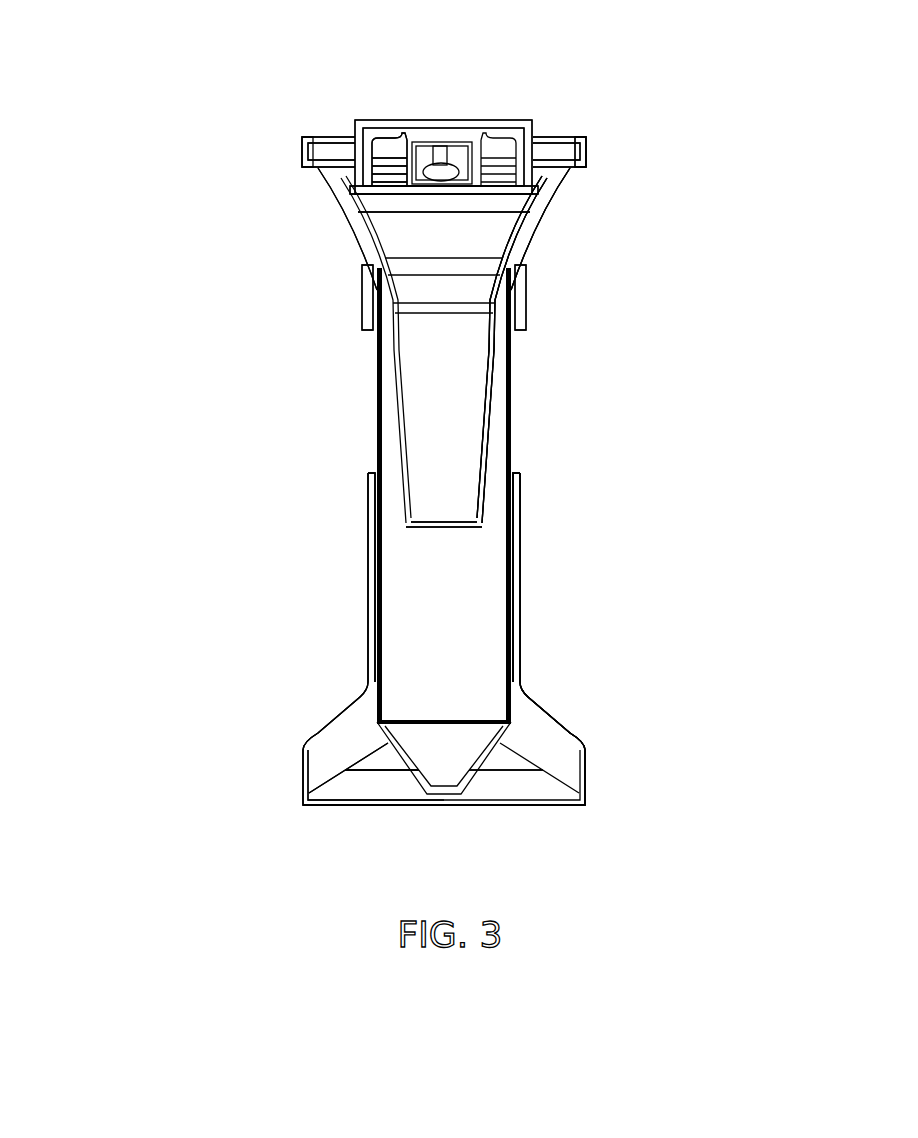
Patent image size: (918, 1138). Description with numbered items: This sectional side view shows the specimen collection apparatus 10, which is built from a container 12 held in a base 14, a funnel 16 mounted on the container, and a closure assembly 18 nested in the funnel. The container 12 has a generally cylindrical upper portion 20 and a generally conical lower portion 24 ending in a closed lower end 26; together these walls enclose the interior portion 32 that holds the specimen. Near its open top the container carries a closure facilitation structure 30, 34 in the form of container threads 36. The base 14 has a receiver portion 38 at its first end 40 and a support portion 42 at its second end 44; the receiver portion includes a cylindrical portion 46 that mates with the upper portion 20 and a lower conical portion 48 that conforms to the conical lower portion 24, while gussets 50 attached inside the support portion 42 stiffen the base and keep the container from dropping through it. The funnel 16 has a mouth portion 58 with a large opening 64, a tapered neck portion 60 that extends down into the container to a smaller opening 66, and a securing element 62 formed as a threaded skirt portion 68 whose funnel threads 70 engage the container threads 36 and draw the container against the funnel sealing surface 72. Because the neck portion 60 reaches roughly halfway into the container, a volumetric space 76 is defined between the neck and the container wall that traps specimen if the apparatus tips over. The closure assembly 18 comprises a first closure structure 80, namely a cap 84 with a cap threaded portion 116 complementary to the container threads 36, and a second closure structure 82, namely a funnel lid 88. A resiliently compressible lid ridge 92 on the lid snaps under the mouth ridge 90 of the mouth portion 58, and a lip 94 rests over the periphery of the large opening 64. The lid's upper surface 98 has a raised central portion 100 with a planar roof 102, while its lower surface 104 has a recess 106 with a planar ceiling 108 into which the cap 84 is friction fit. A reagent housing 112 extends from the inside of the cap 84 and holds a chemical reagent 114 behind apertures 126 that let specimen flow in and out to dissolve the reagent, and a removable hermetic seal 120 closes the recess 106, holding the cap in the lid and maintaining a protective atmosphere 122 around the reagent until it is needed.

The specimen collection apparatus 10 is at (128, 248).
The container 12 is at (512, 373).
The base 14 is at (592, 672).
The funnel 16 is at (664, 237).
The closure assembly 18 is at (635, 72).
The upper portion 20 is at (514, 421).
The lower portion 24 is at (472, 775).
The lower end 26 is at (433, 826).
The closure facilitation structure 30 is at (465, 828).
The interior portion 32 is at (430, 595).
The closure facilitation structure 34 is at (520, 282).
The threads 36 is at (556, 297).
The receiver portion 38 is at (521, 510).
The first end 40 is at (622, 470).
The support portion 42 is at (568, 745).
The second end 44 is at (596, 832).
The cylindrical portion 46 is at (522, 563).
The lower conical portion 48 is at (390, 762).
The gussets 50 is at (318, 752).
The mouth portion 58 is at (560, 193).
The neck portion 60 is at (390, 373).
The securing element 62 is at (516, 300).
The large opening 64 is at (247, 100).
The smaller opening 66 is at (437, 530).
The threaded flange or skirt portion 68 is at (365, 307).
The funnel threads 70 is at (553, 495).
The funnel sealing surface 72 is at (362, 267).
The volumetric space 76 is at (382, 426).
The first closure structure 80 is at (372, 137).
The second closure structure 82 is at (340, 143).
The cap 84 is at (548, 133).
The funnel lid 88 is at (586, 145).
The mouth ridge 90 is at (585, 170).
The lid ridge 92 is at (303, 148).
The lip 94 is at (535, 121).
The upper surface 98 is at (565, 175).
The central portion 100 is at (452, 165).
The roof 102 is at (475, 150).
The lower surface 104 is at (415, 172).
The recess 106 is at (590, 148).
The ceiling 108 is at (423, 124).
The reagent housing 112 is at (350, 180).
The chemical reagent 114 is at (405, 176).
The cap threaded portion 116 is at (522, 193).
The removable hermetic seal 120 is at (510, 197).
The atmosphere 122 is at (490, 137).
The apertures 126 is at (455, 143).